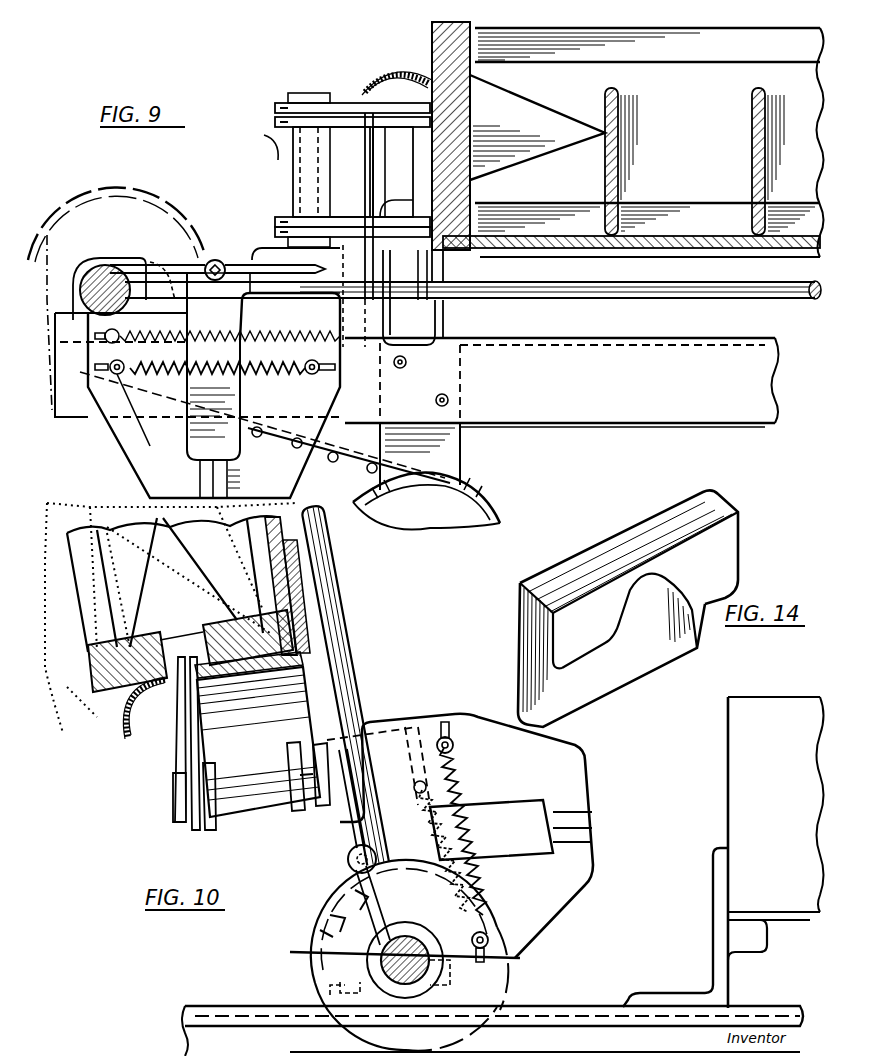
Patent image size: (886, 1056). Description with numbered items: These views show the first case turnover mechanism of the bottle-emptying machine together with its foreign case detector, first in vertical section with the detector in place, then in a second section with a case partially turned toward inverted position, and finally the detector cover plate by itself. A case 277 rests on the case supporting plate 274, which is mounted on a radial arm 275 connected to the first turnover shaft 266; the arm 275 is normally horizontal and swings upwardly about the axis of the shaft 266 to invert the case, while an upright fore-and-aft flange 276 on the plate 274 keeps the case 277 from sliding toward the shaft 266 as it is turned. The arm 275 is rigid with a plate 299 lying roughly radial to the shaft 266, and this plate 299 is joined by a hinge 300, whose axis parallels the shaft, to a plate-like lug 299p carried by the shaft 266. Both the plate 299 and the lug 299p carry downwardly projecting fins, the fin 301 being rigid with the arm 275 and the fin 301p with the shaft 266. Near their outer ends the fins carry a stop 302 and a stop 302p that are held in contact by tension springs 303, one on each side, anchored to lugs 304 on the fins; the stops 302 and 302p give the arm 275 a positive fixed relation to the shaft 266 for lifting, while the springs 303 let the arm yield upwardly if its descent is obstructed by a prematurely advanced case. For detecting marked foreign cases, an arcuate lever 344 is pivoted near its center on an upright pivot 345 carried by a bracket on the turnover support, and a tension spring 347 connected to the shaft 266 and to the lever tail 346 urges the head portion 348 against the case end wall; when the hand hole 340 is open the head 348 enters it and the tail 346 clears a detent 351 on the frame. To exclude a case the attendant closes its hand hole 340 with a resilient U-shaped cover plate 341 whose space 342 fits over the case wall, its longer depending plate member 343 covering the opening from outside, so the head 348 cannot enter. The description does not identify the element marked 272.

In FIG. 9, the shaft 266 is at (102, 272).
In FIG. 10, the shaft 266 is at (382, 963).
In FIG. 9, the wedge guide 272 is at (515, 142).
In FIG. 9, the case supporting plate 274 is at (512, 265).
In FIG. 10, the case supporting plate 274 is at (292, 562).
In FIG. 9, the radial arm 275 is at (597, 292).
In FIG. 10, the radial arm 275 is at (322, 600).
In FIG. 9, the flange 276 is at (387, 83).
In FIG. 10, the flange 276 is at (128, 735).
In FIG. 9, the case 277 is at (718, 99).
In FIG. 10, the case 277 is at (778, 722).
In FIG. 9, the plate 299 is at (165, 268).
In FIG. 10, the plate 299 is at (328, 818).
In FIG. 10, the plate-like lug 299p is at (362, 910).
In FIG. 9, the hinge 300 is at (217, 259).
In FIG. 9, the fin 301 is at (305, 475).
In FIG. 10, the fin 301 is at (527, 732).
In FIG. 9, the fin 301p is at (118, 456).
In FIG. 10, the fin 301p is at (575, 918).
In FIG. 9, the stop plate 302 is at (232, 482).
In FIG. 10, the stop plate 302 is at (593, 795).
In FIG. 9, the stop plate 302p is at (205, 478).
In FIG. 10, the stop plate 302p is at (595, 840).
In FIG. 9, the tension springs 303 is at (270, 376).
In FIG. 10, the tension springs 303 is at (470, 850).
In FIG. 9, the lugs 304 is at (160, 430).
In FIG. 10, the lugs 304 is at (515, 958).
In FIG. 9, the hand hole 340 is at (455, 130).
In FIG. 10, the hand hole 340 is at (180, 637).
In FIG. 9, the U-shaped cover plate 341 is at (430, 22).
In FIG. 14, the U-shaped cover plate 341 is at (518, 620).
In FIG. 9, the space 342 is at (325, 153).
In FIG. 14, the space 342 is at (540, 662).
In FIG. 14, the depending plate member 343 is at (518, 665).
In FIG. 9, the lever 344 is at (345, 217).
In FIG. 9, the pivot 345 is at (312, 165).
In FIG. 9, the tail 346 is at (420, 374).
In FIG. 9, the tension spring 347 is at (215, 334).
In FIG. 10, the tension spring 347 is at (350, 852).
In FIG. 9, the head portion 348 is at (400, 103).
In FIG. 9, the detent 351 is at (443, 326).